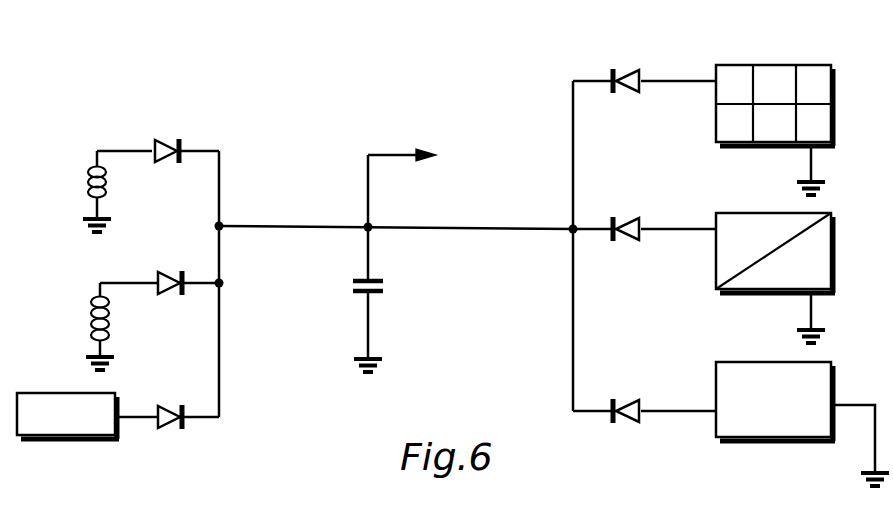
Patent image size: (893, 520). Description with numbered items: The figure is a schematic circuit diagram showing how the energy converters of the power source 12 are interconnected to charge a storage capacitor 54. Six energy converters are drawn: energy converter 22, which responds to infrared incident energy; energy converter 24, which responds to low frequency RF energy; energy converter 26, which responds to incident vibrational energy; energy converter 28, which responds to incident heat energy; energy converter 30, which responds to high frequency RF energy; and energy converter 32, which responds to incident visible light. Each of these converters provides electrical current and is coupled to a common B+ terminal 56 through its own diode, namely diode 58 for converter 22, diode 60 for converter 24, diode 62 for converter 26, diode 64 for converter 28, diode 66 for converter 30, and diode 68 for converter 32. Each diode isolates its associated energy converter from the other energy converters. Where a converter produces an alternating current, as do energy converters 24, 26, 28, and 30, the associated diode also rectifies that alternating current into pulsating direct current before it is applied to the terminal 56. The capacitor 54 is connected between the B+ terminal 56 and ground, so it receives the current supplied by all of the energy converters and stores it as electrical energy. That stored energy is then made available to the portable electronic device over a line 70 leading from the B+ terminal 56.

The power source 12 is at (250, 70).
The energy converter 22 is at (836, 243).
The energy converter 24 is at (88, 325).
The energy converter 26 is at (80, 440).
The energy converter 28 is at (836, 380).
The energy converter 30 is at (88, 183).
The energy converter 32 is at (803, 70).
The storage capacitor 54 is at (383, 281).
The B+ terminal 56 is at (365, 232).
The diode 58 is at (636, 213).
The diode 60 is at (168, 270).
The diode 62 is at (166, 433).
The diode 64 is at (636, 393).
The diode 66 is at (166, 138).
The diode 68 is at (636, 63).
The line 70 is at (393, 150).